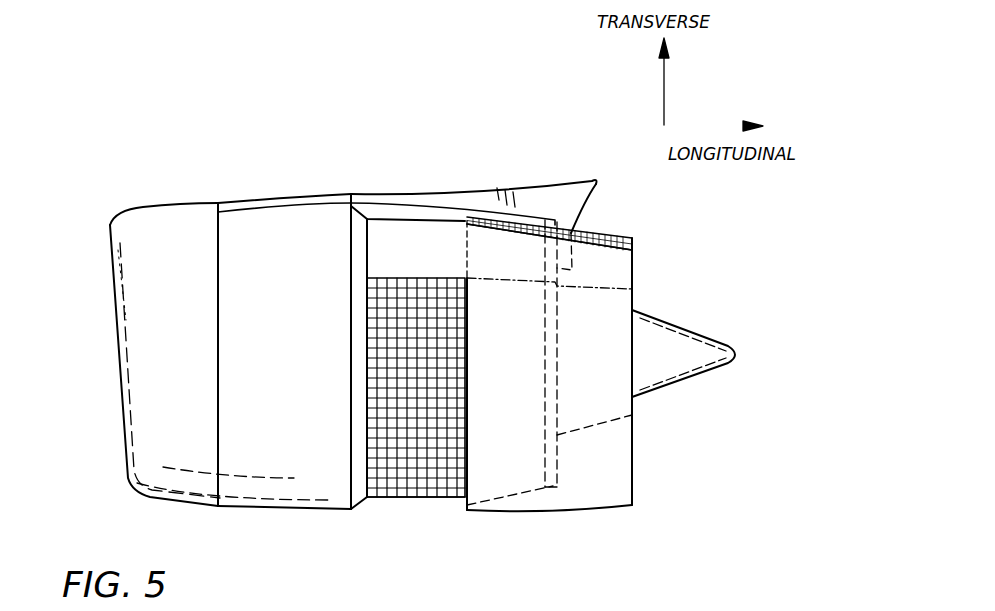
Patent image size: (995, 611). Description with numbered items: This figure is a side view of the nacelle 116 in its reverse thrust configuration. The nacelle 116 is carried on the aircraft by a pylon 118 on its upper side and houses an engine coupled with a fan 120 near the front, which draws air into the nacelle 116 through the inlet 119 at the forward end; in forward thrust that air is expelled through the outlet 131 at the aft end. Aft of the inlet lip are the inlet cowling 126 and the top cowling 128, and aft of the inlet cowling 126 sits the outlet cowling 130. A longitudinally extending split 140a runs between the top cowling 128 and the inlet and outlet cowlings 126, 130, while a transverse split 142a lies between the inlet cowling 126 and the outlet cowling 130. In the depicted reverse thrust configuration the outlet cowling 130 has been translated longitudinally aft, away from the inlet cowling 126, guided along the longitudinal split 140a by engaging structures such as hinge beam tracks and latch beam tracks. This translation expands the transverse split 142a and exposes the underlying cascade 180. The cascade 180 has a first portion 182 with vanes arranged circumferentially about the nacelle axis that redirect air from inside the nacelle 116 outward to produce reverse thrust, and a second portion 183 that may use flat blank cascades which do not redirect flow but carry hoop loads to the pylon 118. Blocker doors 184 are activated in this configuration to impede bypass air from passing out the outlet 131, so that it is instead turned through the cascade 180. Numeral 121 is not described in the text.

The nacelle 116 is at (138, 182).
The pylon 118 is at (408, 187).
The inlet 119 is at (100, 412).
The fan 120 is at (628, 266).
The seal land 121 is at (596, 241).
The inlet cowling 126 is at (250, 490).
The top cowling 128 is at (253, 200).
The outlet cowling 130 is at (608, 480).
The outlet 131 is at (646, 445).
The longitudinally extending split 140a is at (280, 213).
The transverse split 142a is at (342, 310).
The cascade 180 is at (423, 505).
The first portion of the cascade 182 is at (377, 475).
The second portion of the cascade 183 is at (420, 243).
The blocker door 184 is at (553, 490).